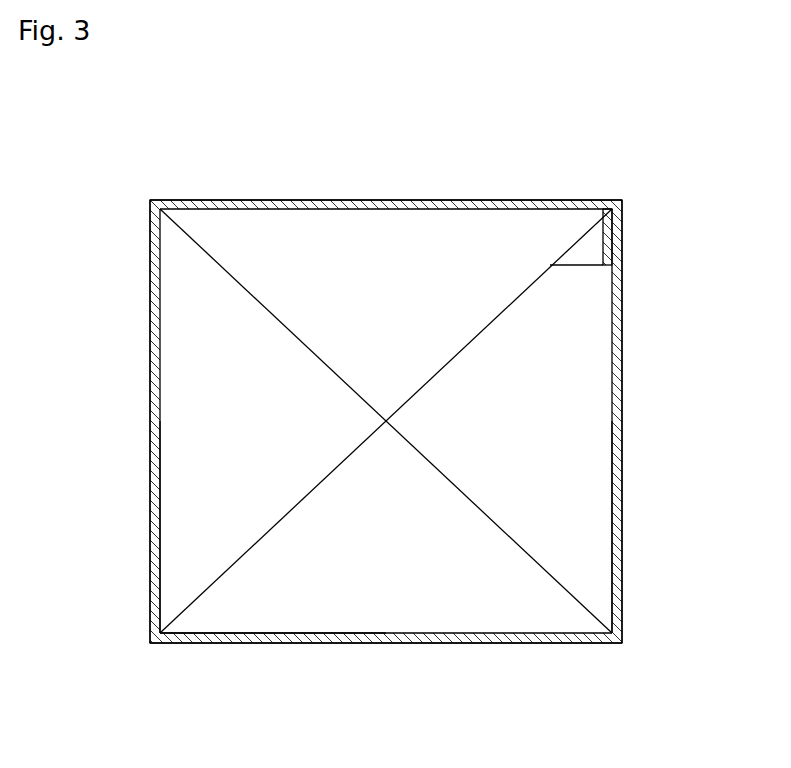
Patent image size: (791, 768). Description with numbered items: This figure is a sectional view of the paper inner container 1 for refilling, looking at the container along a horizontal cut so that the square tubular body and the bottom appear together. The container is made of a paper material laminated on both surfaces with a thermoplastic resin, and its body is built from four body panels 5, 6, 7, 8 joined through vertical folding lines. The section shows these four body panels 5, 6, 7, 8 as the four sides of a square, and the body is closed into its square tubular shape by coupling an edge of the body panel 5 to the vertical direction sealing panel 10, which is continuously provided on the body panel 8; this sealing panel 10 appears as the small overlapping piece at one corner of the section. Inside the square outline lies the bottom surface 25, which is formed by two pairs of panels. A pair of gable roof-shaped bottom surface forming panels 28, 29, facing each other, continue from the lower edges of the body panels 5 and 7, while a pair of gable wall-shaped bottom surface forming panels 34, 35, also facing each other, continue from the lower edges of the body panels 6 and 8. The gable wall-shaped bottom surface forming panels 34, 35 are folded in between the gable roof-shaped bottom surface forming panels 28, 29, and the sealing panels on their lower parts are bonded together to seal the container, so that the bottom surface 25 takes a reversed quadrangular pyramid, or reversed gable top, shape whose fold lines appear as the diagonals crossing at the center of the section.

The paper inner container 1 is at (558, 160).
The body panel 5 is at (622, 393).
The body panel 6 is at (372, 643).
The body panel 7 is at (150, 420).
The body panel 8 is at (388, 208).
The vertical direction sealing panel 10 is at (622, 228).
The bottom surface 25 is at (298, 622).
The gable roof-shaped bottom surface forming panel 28 is at (590, 497).
The gable roof-shaped bottom surface forming panel 29 is at (187, 502).
The gable wall-shaped bottom surface forming panel 34 is at (465, 620).
The gable wall-shaped bottom surface forming panel 35 is at (282, 222).